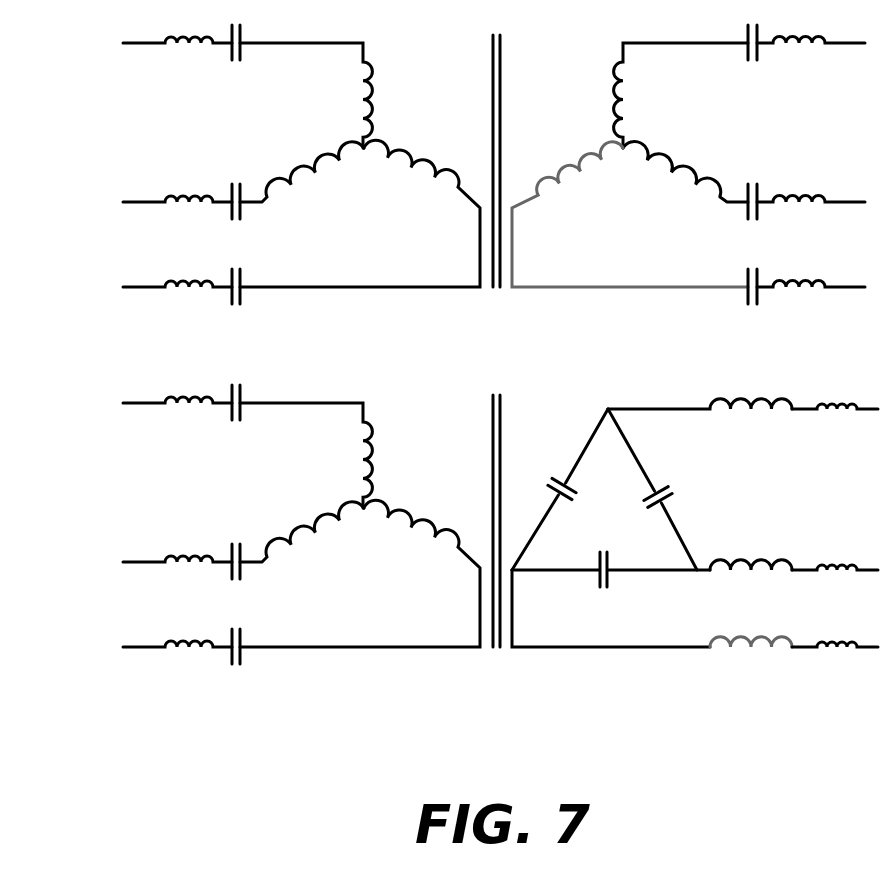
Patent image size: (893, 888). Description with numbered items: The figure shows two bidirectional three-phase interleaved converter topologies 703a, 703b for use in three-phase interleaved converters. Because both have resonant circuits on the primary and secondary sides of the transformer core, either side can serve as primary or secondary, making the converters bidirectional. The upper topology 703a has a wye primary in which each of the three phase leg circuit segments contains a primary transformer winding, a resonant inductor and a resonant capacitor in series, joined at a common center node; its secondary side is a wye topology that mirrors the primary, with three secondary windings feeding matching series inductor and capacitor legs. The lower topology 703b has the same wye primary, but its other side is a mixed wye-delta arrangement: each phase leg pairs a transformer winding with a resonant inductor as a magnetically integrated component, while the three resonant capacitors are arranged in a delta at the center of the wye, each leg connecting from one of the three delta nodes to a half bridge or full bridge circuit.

The bidirectional three-phase interleaved converter topology 703a is at (99, 166).
The bidirectional three-phase interleaved converter topology 703b is at (99, 473).